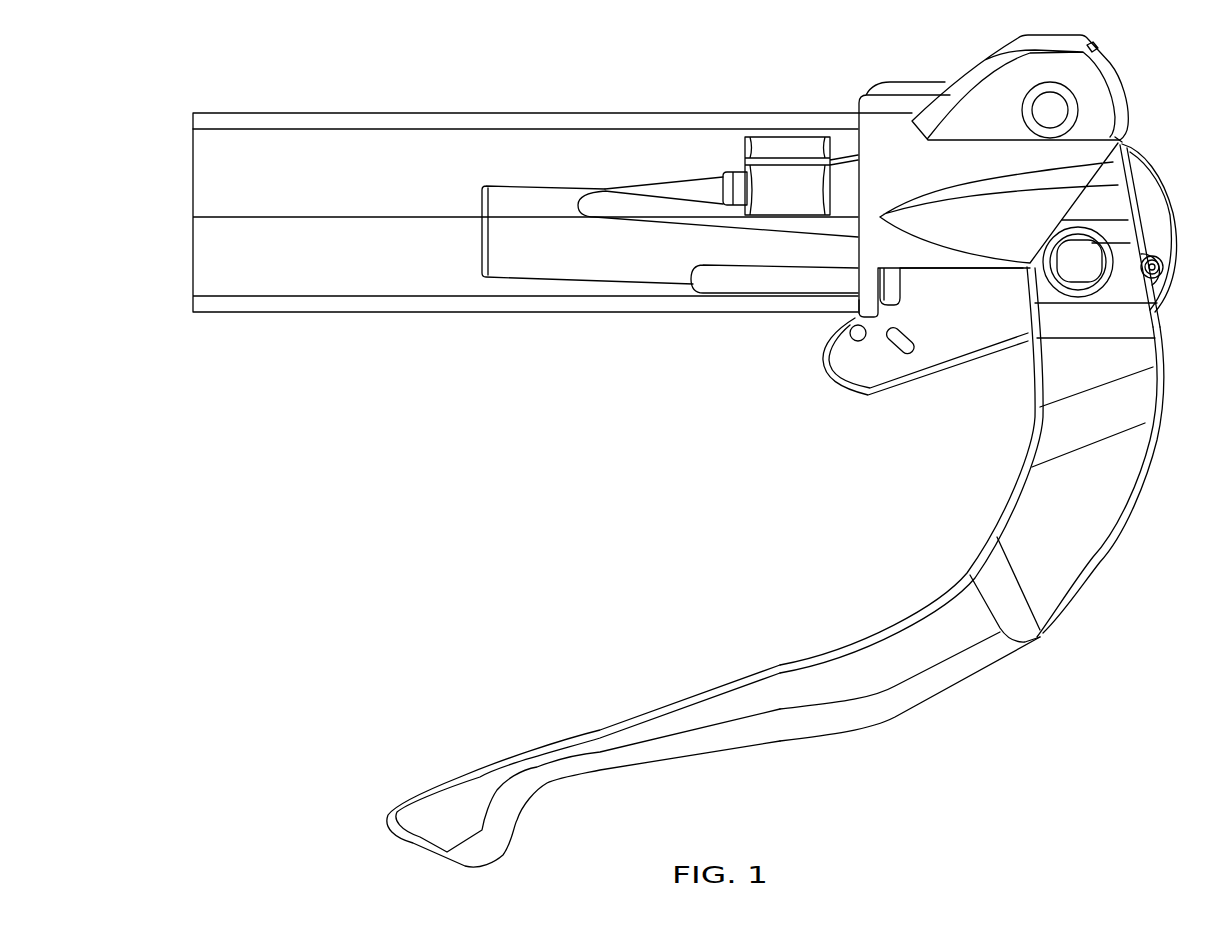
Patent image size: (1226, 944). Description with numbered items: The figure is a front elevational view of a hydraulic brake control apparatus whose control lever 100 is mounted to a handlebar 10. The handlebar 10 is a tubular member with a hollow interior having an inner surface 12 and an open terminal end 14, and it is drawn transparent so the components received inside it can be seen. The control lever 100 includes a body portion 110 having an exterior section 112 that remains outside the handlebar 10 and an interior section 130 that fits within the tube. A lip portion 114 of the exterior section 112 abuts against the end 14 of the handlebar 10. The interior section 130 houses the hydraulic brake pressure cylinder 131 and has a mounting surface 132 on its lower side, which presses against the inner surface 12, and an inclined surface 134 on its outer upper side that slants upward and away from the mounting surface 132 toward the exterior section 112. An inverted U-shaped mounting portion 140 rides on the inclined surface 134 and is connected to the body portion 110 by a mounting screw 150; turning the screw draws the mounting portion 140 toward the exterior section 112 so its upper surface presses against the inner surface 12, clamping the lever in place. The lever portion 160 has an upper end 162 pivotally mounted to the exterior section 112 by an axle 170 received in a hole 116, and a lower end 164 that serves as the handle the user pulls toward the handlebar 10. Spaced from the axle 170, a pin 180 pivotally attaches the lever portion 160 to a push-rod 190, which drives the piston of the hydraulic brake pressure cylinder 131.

The handlebar 10 is at (324, 312).
The inner surface 12 is at (284, 130).
The open terminal end 14 is at (860, 112).
The control lever 100 is at (685, 470).
The body portion 110 is at (856, 317).
The exterior section 112 is at (965, 69).
The lip portion 114 is at (858, 300).
The hole 116 is at (1057, 84).
The interior section 130 is at (670, 212).
The hydraulic brake pressure cylinder 131 is at (563, 278).
The mounting surface 132 is at (742, 291).
The inclined surface 134 is at (688, 178).
The mounting portion 140 is at (772, 137).
The mounting screw 150 is at (732, 172).
The lever portion 160 is at (782, 505).
The upper end 162 is at (1131, 178).
The lower end 164 is at (559, 781).
The axle 170 is at (1069, 101).
The pin 180 is at (1100, 249).
The push-rod 190 is at (1003, 276).